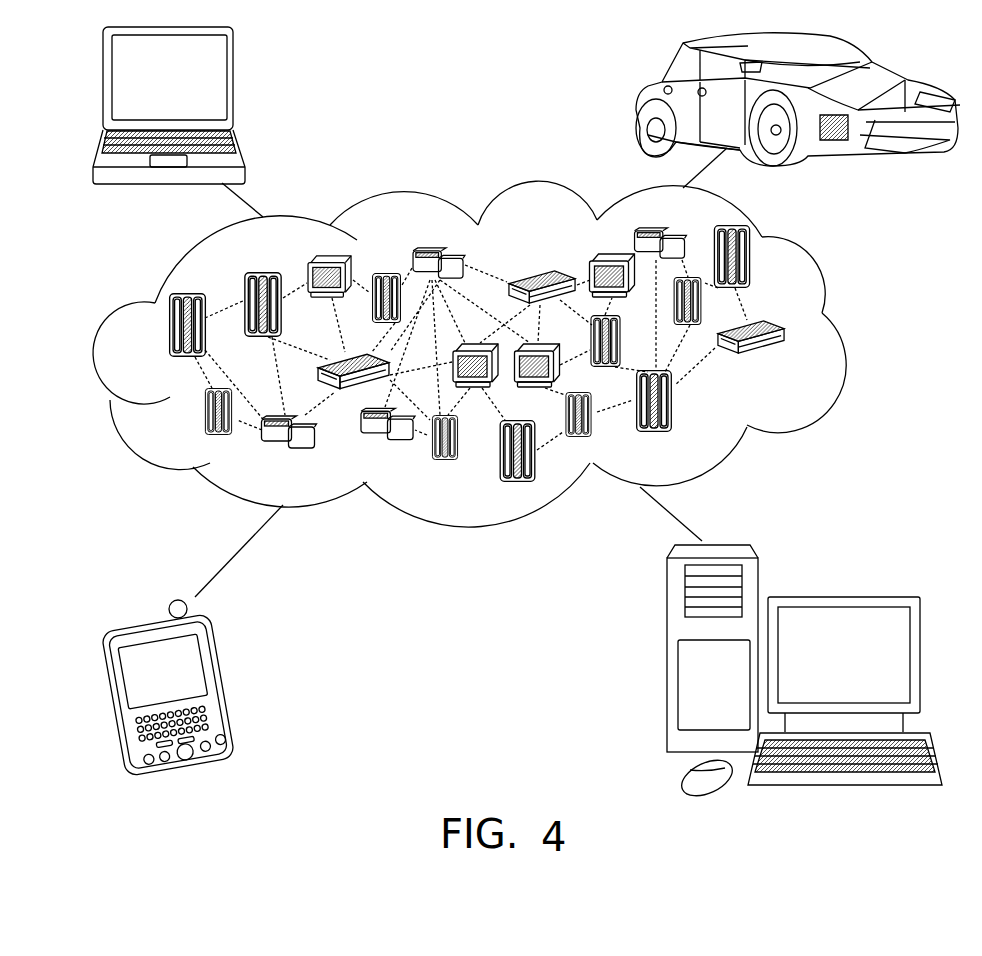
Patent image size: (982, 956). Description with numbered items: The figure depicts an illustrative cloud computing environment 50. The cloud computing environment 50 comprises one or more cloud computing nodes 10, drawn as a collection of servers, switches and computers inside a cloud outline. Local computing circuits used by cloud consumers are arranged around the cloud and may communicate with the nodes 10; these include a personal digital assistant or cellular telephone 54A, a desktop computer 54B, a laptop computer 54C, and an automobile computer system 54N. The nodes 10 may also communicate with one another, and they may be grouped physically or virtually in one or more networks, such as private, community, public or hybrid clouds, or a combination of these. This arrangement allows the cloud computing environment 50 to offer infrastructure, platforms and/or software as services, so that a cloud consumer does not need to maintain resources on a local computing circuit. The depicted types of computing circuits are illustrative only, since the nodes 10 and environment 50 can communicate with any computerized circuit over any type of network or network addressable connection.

The cloud computing nodes 10 is at (788, 361).
The cloud computing environment 50 is at (843, 338).
The personal digital assistant (PDA) or cellular telephone 54A is at (222, 681).
The desktop computer 54B is at (840, 596).
The laptop computer 54C is at (233, 87).
The automobile computer system 54N is at (640, 98).